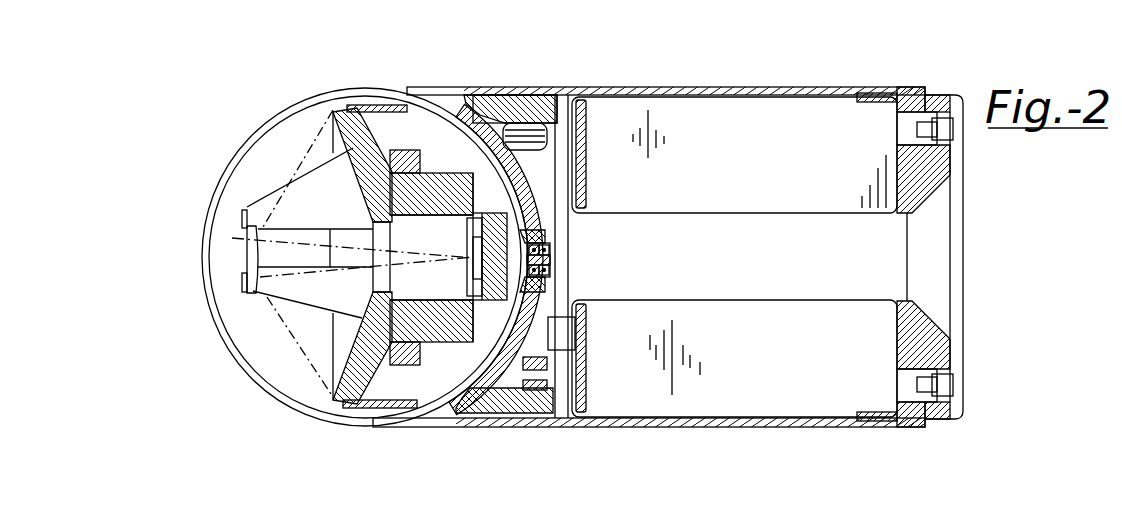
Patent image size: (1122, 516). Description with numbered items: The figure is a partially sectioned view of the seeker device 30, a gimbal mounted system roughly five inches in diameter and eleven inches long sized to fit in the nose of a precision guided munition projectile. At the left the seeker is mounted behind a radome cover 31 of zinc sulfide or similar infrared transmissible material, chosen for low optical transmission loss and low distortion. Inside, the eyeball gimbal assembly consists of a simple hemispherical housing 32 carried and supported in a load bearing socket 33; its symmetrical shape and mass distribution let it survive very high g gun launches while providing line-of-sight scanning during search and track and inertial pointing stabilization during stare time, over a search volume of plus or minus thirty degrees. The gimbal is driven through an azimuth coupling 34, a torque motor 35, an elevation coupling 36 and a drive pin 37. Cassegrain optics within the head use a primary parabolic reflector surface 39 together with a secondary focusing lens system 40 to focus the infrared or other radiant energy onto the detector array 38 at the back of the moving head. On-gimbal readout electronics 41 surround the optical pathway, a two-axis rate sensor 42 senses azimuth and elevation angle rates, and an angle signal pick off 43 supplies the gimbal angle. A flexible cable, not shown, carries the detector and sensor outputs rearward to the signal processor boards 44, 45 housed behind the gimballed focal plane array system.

The seeker device 30 is at (515, 429).
The radome cover 31 is at (208, 207).
The hemispherical housing 32 is at (352, 105).
The load bearing socket 33 is at (450, 397).
The azimuth coupling 34 is at (473, 105).
The torque motor 35 is at (550, 136).
The elevation coupling 36 is at (552, 249).
The drive pin 37 is at (553, 275).
The detector array 38 is at (472, 262).
The primary parabolic reflector surface 39 is at (333, 400).
The secondary focusing lens system 40 is at (247, 262).
The on-gimbal readout electronics 41 is at (410, 337).
The two-axis rate sensor 42 is at (420, 92).
The angle signal pick off 43 is at (553, 377).
The signal processor board 44 is at (780, 113).
The signal processor board 45 is at (768, 395).